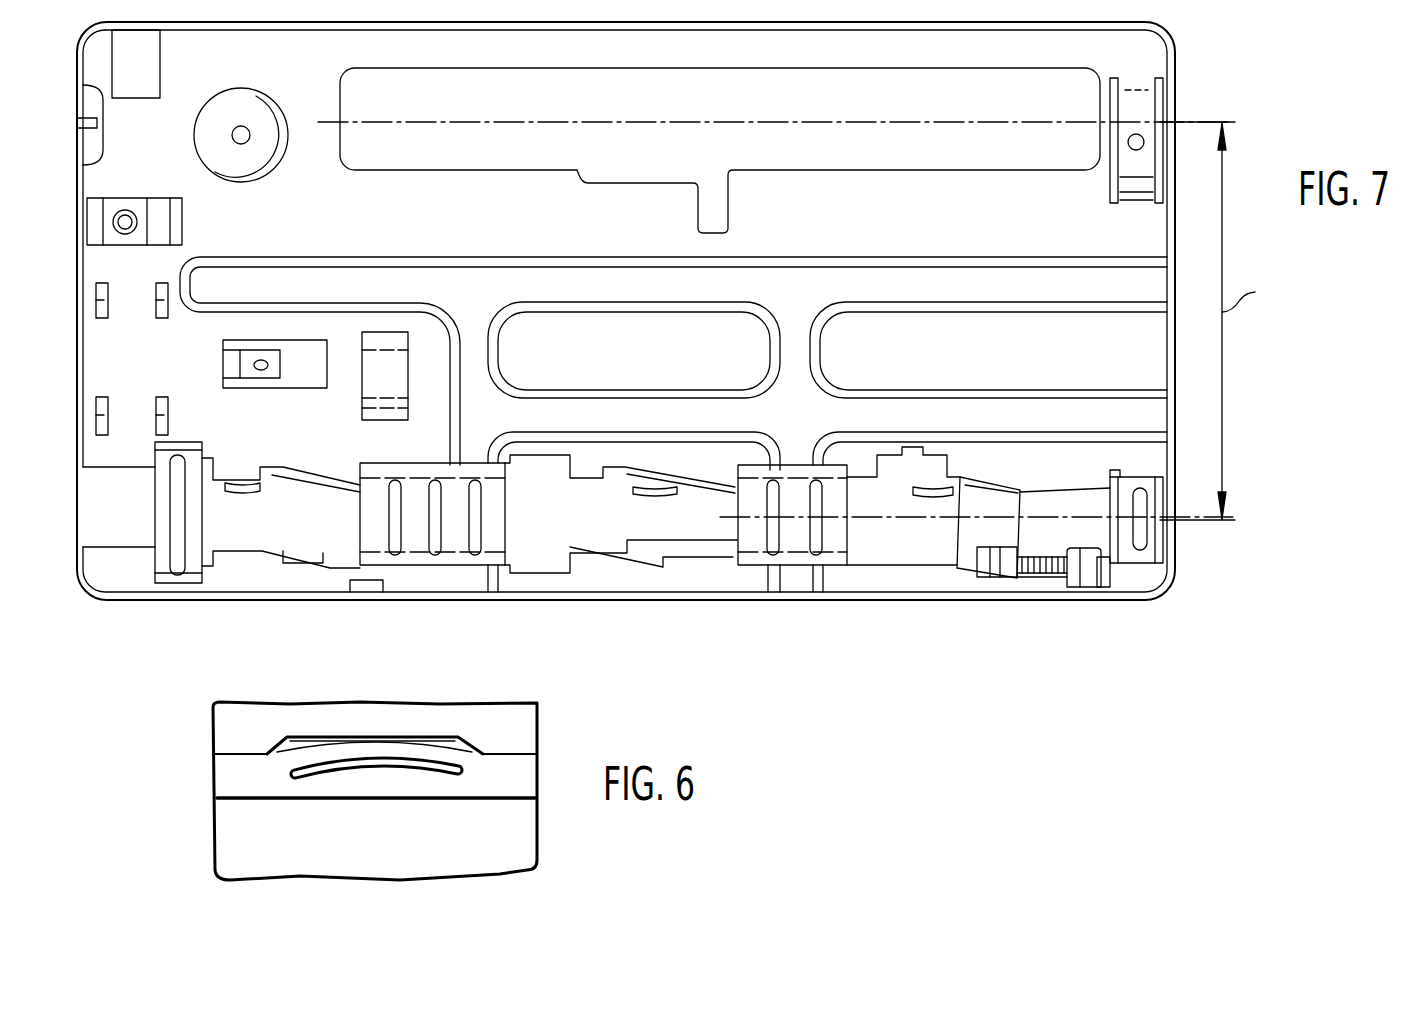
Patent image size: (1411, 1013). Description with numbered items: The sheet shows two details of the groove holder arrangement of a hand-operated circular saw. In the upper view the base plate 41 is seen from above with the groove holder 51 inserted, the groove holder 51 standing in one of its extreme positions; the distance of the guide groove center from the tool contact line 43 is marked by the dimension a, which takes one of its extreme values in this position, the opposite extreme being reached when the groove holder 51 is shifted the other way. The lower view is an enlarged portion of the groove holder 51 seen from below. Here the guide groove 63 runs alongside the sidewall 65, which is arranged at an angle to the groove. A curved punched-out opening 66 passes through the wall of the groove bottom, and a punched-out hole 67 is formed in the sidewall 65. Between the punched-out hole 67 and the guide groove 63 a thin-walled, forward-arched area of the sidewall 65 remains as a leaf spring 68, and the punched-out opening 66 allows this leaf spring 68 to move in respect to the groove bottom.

In FIG. 7, the base plate 41 is at (1005, 600).
In FIG. 7, the tool contact line 43 is at (876, 125).
In FIG. 7, the groove holder 51 is at (920, 547).
In FIG. 6, the guide groove 63 is at (226, 729).
In FIG. 6, the sidewall 65 is at (500, 783).
In FIG. 6, the curved punched-out opening 66 is at (360, 763).
In FIG. 6, the punched-out hole 67 is at (457, 742).
In FIG. 6, the leaf spring 68 is at (401, 750).